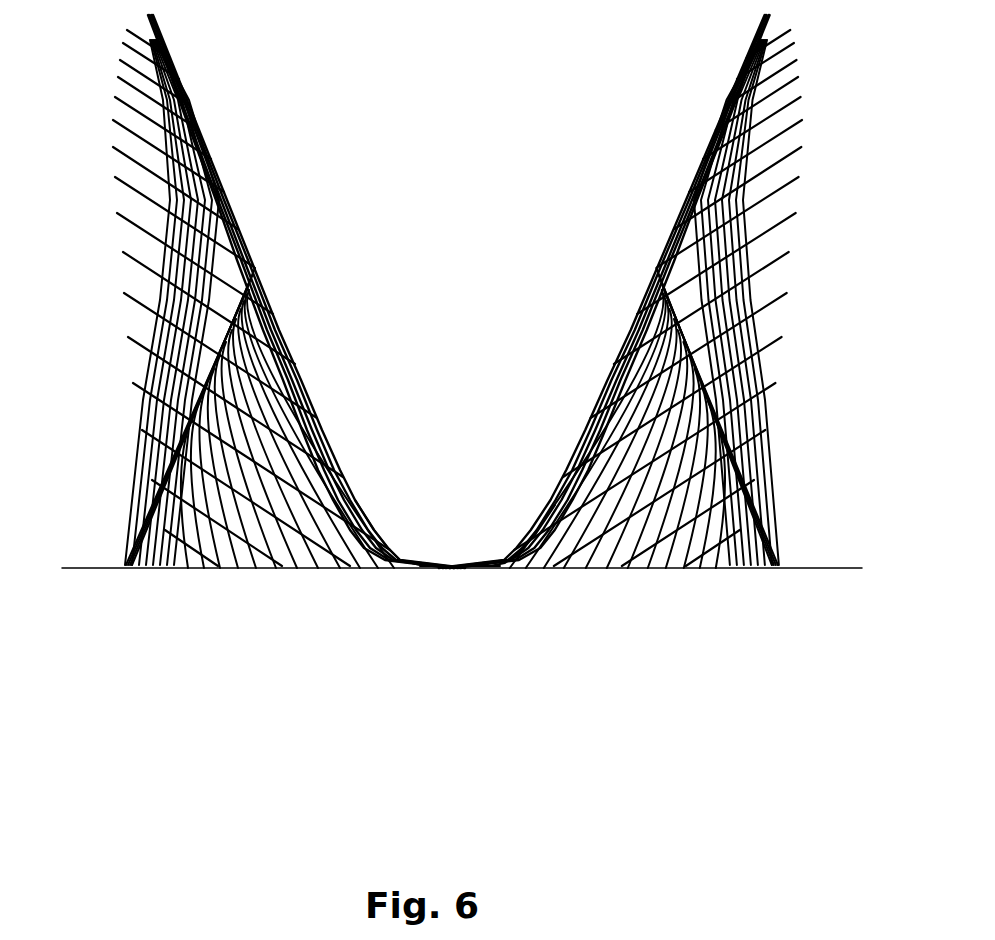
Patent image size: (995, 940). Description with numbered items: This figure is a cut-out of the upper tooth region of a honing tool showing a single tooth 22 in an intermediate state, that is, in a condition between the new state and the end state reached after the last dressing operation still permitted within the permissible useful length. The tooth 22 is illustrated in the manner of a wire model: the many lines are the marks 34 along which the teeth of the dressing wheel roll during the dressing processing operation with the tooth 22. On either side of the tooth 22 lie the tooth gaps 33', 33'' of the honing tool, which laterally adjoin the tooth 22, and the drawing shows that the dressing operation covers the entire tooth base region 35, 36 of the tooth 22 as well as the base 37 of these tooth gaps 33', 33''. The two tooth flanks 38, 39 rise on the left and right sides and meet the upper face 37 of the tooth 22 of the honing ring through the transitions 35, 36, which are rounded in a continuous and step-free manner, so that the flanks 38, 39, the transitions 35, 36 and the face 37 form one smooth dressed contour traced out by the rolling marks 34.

The tooth 22 is at (468, 303).
The tooth gap 33' is at (212, 304).
The tooth gap 33'' is at (689, 304).
The marks 34 is at (130, 230).
The transition 35 is at (373, 508).
The transition 36 is at (524, 506).
The base of the tooth gaps 37 is at (447, 560).
The tooth flank 38 is at (260, 279).
The tooth flank 39 is at (634, 283).